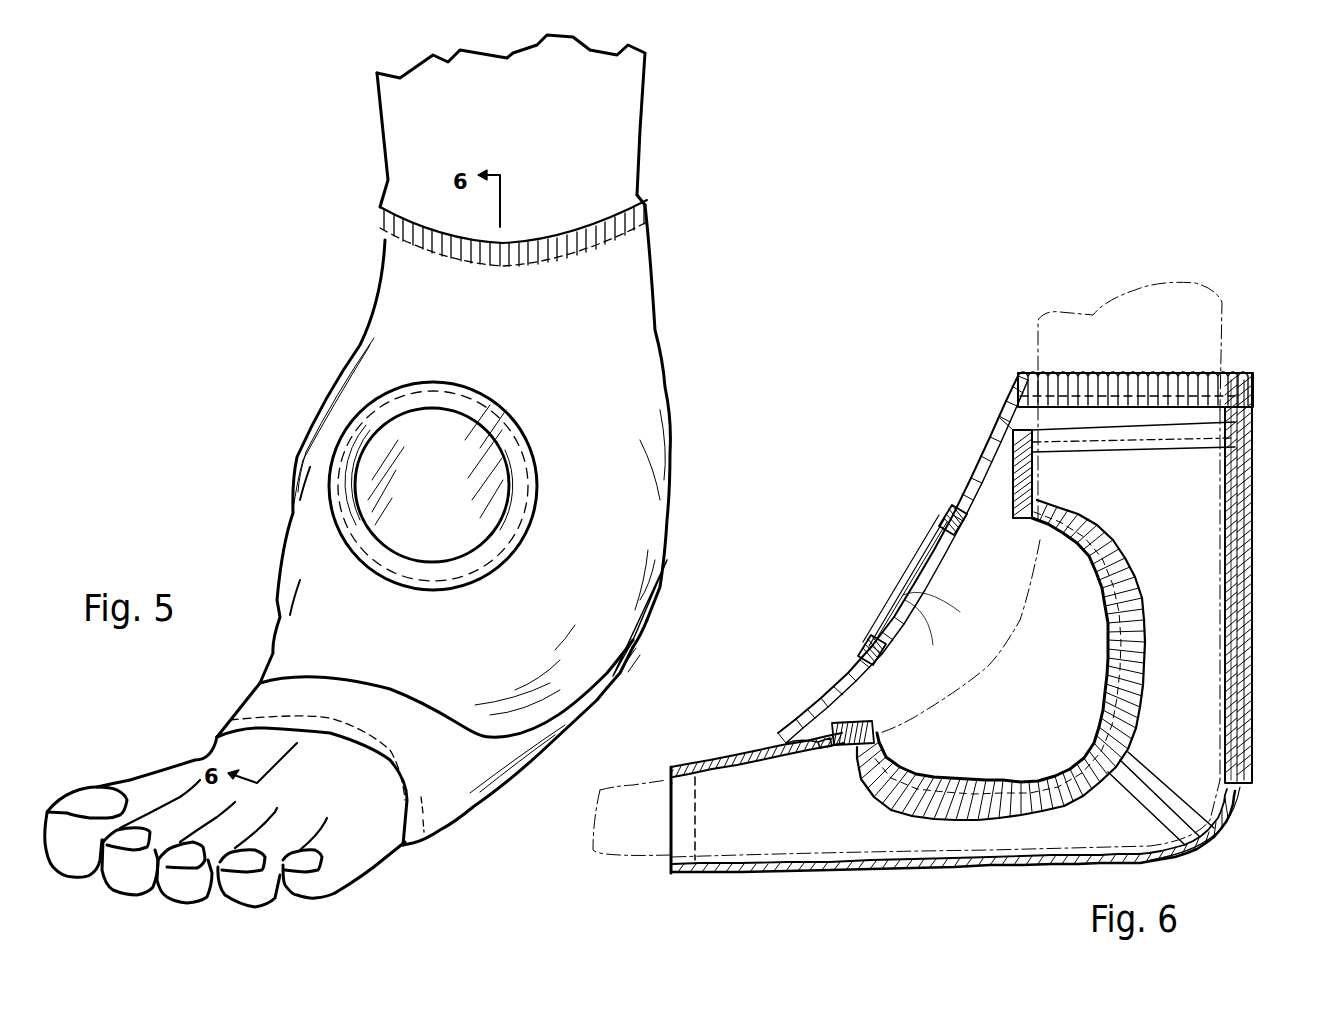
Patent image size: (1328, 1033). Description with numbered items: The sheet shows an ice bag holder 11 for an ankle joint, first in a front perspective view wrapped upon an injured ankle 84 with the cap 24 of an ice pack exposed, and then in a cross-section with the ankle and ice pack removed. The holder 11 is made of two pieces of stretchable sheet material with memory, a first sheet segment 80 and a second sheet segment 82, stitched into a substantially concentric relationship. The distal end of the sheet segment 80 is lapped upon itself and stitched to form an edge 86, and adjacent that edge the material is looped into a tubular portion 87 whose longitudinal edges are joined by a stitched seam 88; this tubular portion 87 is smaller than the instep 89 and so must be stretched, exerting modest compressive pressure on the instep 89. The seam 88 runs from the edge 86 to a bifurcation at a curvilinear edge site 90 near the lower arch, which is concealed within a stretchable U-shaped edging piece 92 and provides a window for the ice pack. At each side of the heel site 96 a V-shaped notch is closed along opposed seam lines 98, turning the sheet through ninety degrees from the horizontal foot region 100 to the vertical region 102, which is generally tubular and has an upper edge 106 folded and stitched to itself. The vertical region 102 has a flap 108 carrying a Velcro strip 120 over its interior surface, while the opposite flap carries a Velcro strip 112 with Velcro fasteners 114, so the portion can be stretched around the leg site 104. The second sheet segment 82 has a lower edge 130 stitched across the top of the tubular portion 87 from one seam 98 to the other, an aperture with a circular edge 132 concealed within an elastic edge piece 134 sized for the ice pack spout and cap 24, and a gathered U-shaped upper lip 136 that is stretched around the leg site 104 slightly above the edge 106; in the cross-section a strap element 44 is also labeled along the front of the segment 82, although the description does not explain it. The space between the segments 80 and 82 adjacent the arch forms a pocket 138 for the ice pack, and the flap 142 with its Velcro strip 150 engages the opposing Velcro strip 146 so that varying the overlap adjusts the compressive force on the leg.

In FIG. 5, the holder 11 is at (655, 296).
In FIG. 6, the holder 11 is at (978, 388).
In FIG. 5, the cap 24 is at (432, 483).
In FIG. 6, the strap 44 is at (903, 595).
In FIG. 5, the sheet segment 80 is at (518, 746).
In FIG. 6, the sheet segment 80 is at (949, 690).
In FIG. 5, the sheet segment 82 is at (465, 359).
In FIG. 6, the sheet segment 82 is at (1138, 413).
In FIG. 5, the ankle 84 is at (390, 863).
In FIG. 6, the ankle 84 is at (617, 862).
In FIG. 5, the edge 86 is at (356, 742).
In FIG. 6, the edge 86 is at (667, 773).
In FIG. 5, the tubular portion 87 is at (312, 720).
In FIG. 6, the tubular portion 87 is at (712, 755).
In FIG. 5, the seam 88 is at (313, 720).
In FIG. 5, the instep 89 is at (223, 794).
In FIG. 6, the instep 89 is at (747, 767).
In FIG. 6, the edge site 90 is at (865, 722).
In FIG. 6, the edging piece 92 is at (1063, 537).
In FIG. 5, the heel site 96 is at (637, 657).
In FIG. 6, the heel site 96 is at (1213, 845).
In FIG. 5, the seam line 98 is at (610, 692).
In FIG. 6, the seam line 98 is at (1140, 760).
In FIG. 5, the foot region 100 is at (463, 813).
In FIG. 6, the foot region 100 is at (817, 868).
In FIG. 6, the vertical region 102 is at (1253, 598).
In FIG. 5, the leg site 104 is at (596, 192).
In FIG. 6, the leg site 104 is at (1233, 300).
In FIG. 6, the upper edge 106 is at (1202, 447).
In FIG. 6, the flap 108 is at (1013, 437).
In FIG. 6, the Velcro strip 112 is at (1033, 427).
In FIG. 6, the Velcro fasteners 114 is at (1018, 378).
In FIG. 6, the Velcro strip 120 is at (1033, 467).
In FIG. 5, the lower edge 130 is at (412, 698).
In FIG. 6, the lower edge 130 is at (810, 718).
In FIG. 6, the circular edge 132 is at (883, 627).
In FIG. 5, the edge piece 134 is at (500, 433).
In FIG. 6, the edge piece 134 is at (928, 560).
In FIG. 5, the upper lip 136 is at (615, 228).
In FIG. 6, the upper lip 136 is at (1117, 403).
In FIG. 6, the pocket 138 is at (916, 635).
In FIG. 6, the flap 142 is at (1247, 523).
In FIG. 6, the Velcro strip 146 is at (1253, 495).
In FIG. 6, the Velcro strip 150 is at (1250, 557).